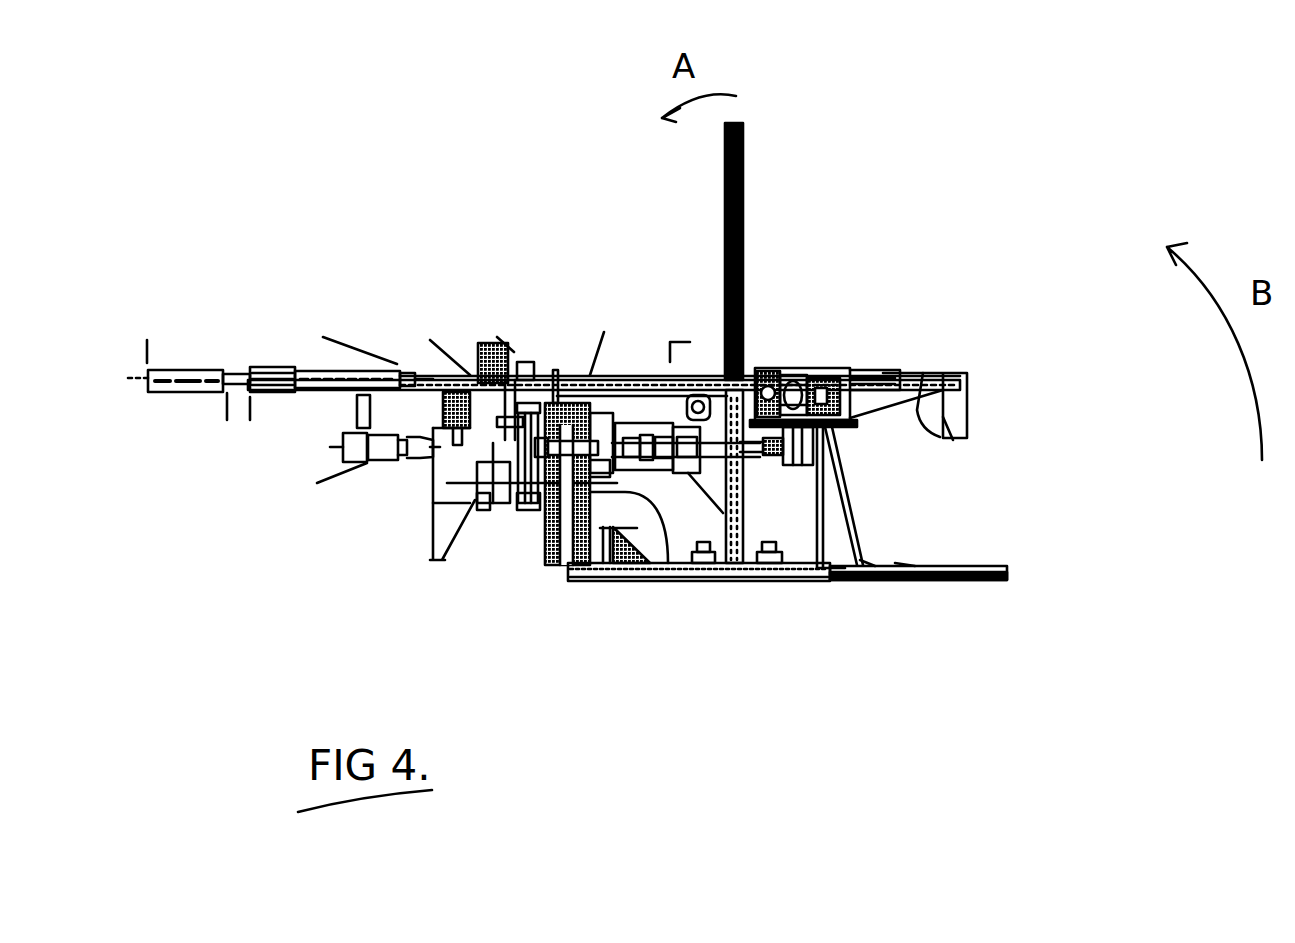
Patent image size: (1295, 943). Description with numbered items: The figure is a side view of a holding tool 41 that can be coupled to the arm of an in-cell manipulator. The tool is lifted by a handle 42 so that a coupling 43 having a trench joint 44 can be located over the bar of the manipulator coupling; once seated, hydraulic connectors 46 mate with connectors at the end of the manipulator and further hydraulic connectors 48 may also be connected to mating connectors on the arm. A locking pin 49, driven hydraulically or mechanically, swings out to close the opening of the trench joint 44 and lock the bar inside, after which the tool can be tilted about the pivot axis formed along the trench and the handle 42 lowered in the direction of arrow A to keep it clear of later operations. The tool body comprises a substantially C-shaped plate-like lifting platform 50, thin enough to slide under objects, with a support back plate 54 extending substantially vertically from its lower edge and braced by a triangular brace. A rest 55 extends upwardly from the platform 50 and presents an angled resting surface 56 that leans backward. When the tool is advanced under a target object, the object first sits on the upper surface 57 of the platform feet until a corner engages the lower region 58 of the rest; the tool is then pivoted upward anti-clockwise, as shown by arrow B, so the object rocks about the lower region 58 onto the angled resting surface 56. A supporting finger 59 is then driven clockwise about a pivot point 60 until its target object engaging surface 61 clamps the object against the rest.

The holding tool 41 is at (414, 147).
The handle 42 is at (744, 153).
The coupling 43 is at (422, 493).
The trench joint 44 is at (527, 527).
The hydraulic connectors 46 is at (362, 457).
The further hydraulic connectors 48 is at (178, 370).
The locking pin 49 is at (500, 515).
The lifting platform 50 is at (1003, 582).
The support back plate 54 is at (662, 568).
The rest 55 is at (840, 583).
The angled resting surface 56 is at (847, 483).
The upper surface 57 is at (905, 543).
The lower region of the rest 58 is at (870, 540).
The supporting finger 59 is at (880, 393).
The pivot point 60 is at (813, 378).
The target object engaging surface 61 is at (930, 373).